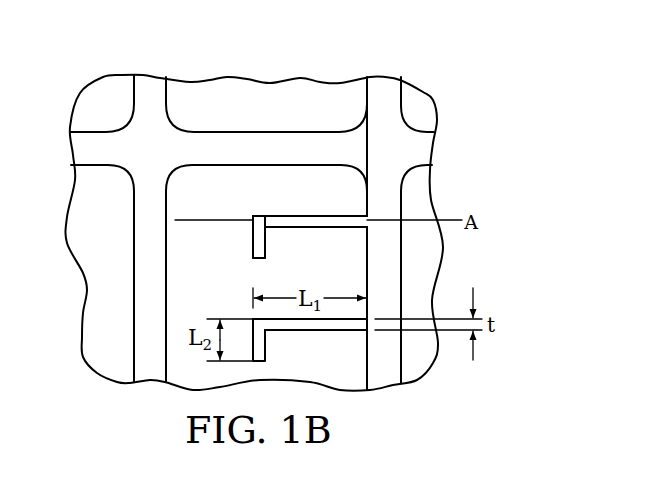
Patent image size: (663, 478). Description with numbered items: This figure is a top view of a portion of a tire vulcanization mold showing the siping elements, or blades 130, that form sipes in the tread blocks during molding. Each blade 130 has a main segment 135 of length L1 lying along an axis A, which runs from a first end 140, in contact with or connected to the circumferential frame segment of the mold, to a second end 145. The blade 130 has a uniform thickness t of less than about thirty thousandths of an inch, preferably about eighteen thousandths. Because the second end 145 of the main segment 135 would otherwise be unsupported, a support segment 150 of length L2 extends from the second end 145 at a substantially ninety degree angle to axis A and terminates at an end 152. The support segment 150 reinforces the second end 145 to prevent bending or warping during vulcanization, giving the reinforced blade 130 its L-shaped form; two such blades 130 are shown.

The blade 130 is at (302, 202).
The main segment 135 is at (313, 228).
The first end 140 is at (365, 215).
The second end 145 is at (259, 216).
The support segment 150 is at (258, 238).
The end 152 is at (250, 258).